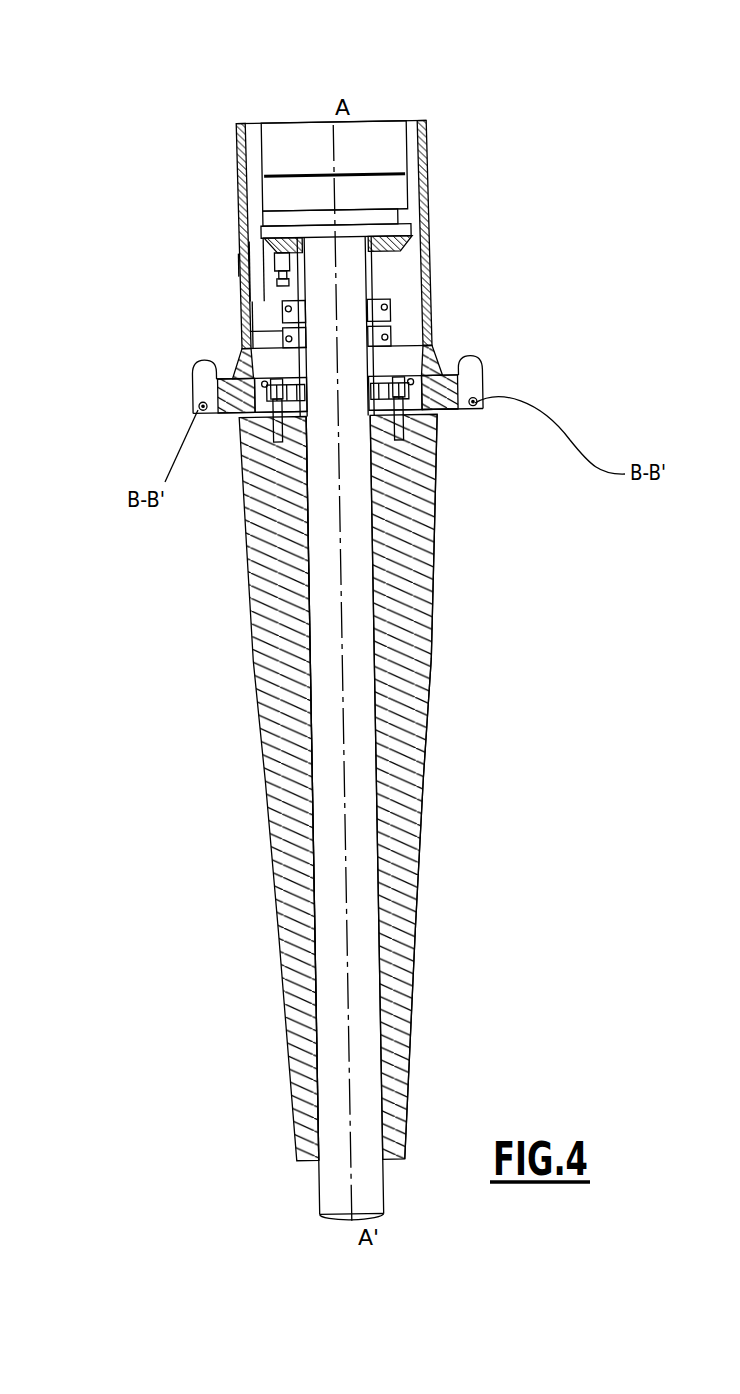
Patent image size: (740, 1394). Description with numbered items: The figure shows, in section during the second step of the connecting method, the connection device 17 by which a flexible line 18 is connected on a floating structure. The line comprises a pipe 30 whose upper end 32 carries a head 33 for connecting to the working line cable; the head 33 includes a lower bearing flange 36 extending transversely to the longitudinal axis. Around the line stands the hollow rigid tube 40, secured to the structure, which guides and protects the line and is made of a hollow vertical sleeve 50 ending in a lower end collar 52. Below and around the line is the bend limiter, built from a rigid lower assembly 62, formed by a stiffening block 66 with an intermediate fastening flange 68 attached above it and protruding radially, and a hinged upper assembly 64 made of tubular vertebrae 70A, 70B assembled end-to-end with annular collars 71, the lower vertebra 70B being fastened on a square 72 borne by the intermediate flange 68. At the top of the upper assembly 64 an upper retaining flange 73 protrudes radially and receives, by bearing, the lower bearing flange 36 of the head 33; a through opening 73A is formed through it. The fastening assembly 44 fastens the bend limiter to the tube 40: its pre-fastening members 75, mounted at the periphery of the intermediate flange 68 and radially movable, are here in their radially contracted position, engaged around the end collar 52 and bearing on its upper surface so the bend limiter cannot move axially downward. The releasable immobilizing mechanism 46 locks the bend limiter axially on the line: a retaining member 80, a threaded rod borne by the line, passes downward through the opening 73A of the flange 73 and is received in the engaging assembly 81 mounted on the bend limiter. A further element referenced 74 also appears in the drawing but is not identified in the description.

The connection device 17 is at (526, 111).
The flexible line 18 is at (280, 1189).
The pipe 30 is at (335, 1135).
The upper end 32 is at (323, 123).
The head 33 is at (372, 113).
The lower bearing flange 36 is at (400, 228).
The hollow rigid tube 40 is at (450, 158).
The fastening assembly 44 is at (562, 388).
The releasable immobilizing mechanism 46 is at (246, 262).
The hollow vertical sleeve 50 is at (252, 254).
The lower end collar 52 is at (226, 368).
The lower assembly 62 is at (178, 704).
The hinged upper assembly 64 is at (234, 313).
The stiffening block 66 is at (403, 760).
The intermediate fastening flange 68 is at (445, 407).
The tubular vertebra 70A is at (388, 272).
The lower tubular vertebra 70B is at (385, 335).
The annular collars 71 is at (242, 331).
The square 72 is at (447, 410).
The upper retaining flange 73 is at (258, 242).
The through opening 73A is at (200, 262).
The bore 74 is at (318, 893).
The pre-fastening members 75 is at (472, 368).
The retaining member 80 is at (263, 212).
The engaging assembly 81 is at (288, 245).